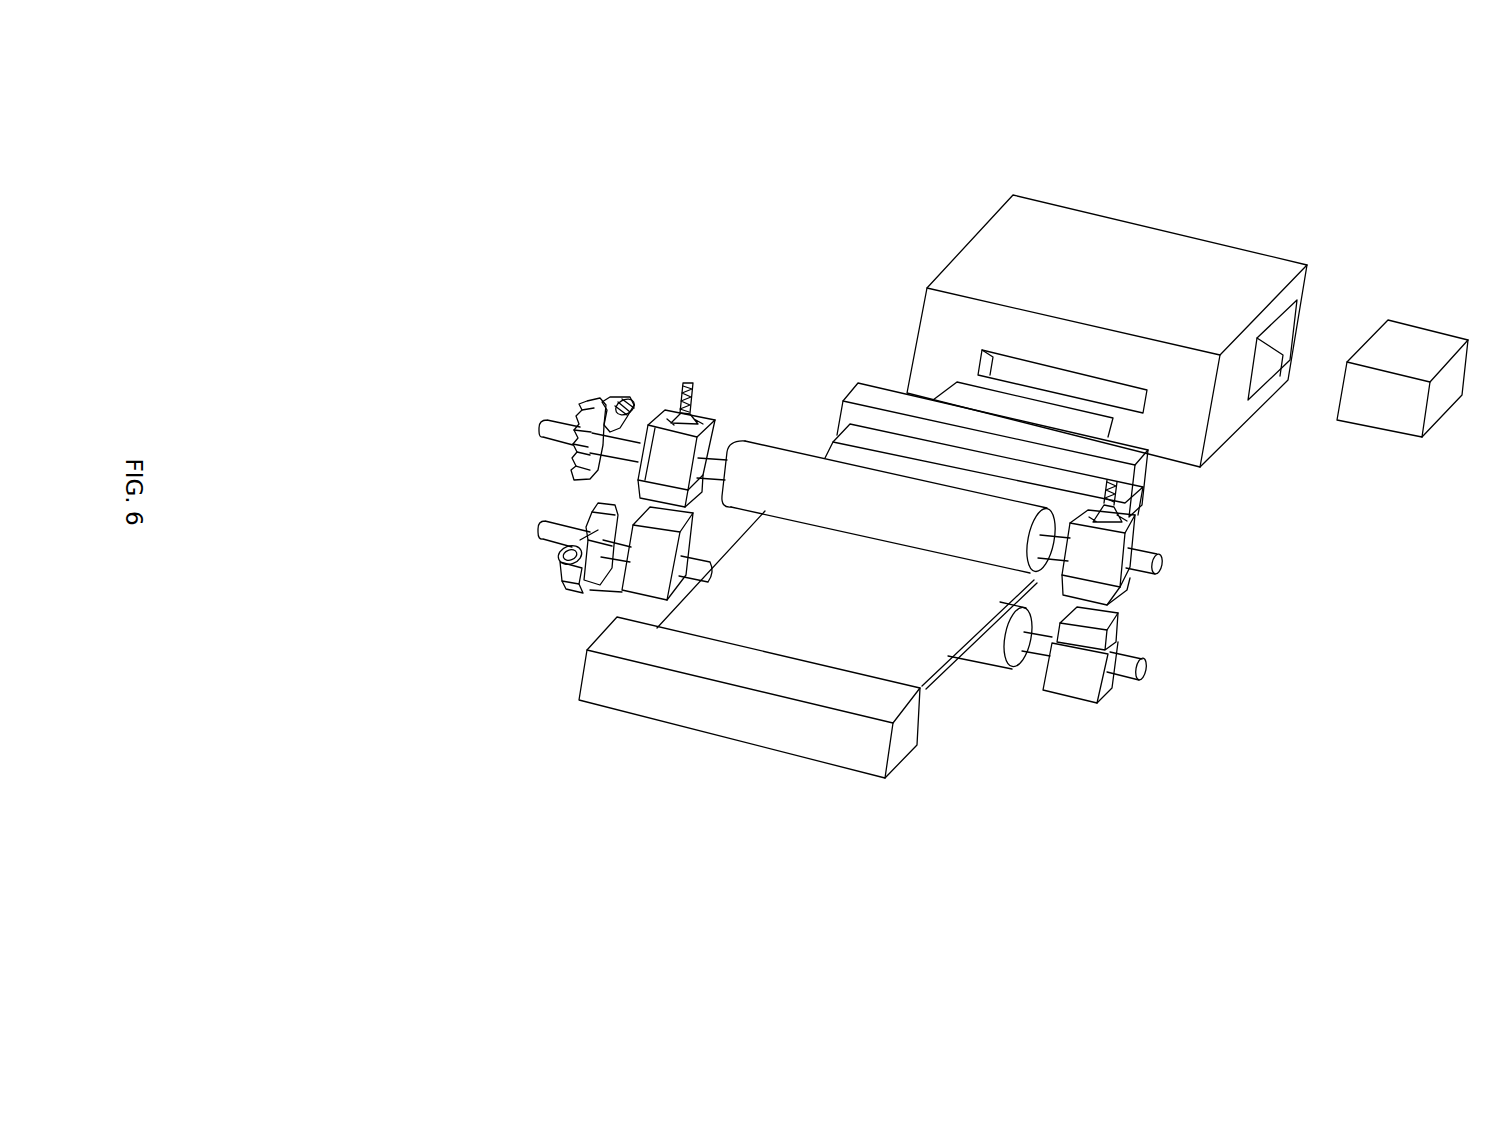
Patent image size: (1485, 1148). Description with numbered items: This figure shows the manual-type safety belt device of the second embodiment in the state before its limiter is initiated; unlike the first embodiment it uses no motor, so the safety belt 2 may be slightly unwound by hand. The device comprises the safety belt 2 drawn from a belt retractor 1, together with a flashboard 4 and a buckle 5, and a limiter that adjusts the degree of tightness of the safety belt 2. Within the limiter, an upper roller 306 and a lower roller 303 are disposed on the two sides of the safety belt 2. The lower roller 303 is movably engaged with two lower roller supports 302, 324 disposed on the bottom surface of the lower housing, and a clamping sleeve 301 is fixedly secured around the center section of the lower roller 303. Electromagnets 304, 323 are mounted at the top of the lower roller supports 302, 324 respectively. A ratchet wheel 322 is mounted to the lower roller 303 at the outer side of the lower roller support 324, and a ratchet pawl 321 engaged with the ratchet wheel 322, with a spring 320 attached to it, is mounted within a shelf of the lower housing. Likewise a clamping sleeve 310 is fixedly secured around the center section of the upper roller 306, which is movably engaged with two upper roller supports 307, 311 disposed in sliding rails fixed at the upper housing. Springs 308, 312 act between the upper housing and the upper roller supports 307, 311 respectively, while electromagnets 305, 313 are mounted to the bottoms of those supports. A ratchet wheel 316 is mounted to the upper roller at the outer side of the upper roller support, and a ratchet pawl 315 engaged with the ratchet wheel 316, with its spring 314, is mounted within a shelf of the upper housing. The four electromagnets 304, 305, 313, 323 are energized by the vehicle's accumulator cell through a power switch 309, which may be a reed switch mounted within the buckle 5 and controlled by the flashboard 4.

The belt retractor 1 is at (650, 698).
The safety belt 2 is at (917, 638).
The flashboard 4 is at (1122, 473).
The buckle 5 is at (1210, 258).
The clamping sleeve 301 is at (990, 657).
The lower roller support 302 is at (1080, 688).
The lower roller 303 is at (1125, 667).
The electromagnet 304 is at (1122, 632).
The electromagnet 305 is at (1117, 621).
The upper roller 306 is at (1107, 593).
The upper roller support 307 is at (1147, 562).
The spring 308 is at (1118, 496).
The power switch 309 is at (1377, 343).
The clamping sleeve 310 is at (784, 457).
The upper roller support 311 is at (697, 452).
The spring 312 is at (692, 381).
The electromagnet 313 is at (647, 483).
The spring 314 is at (630, 403).
The ratchet pawl 315 is at (606, 380).
The ratchet wheel 316 is at (583, 422).
The spring 320 is at (550, 567).
The ratchet pawl 321 is at (568, 585).
The ratchet wheel 322 is at (600, 563).
The electromagnet 323 is at (620, 585).
The lower roller support 324 is at (608, 598).